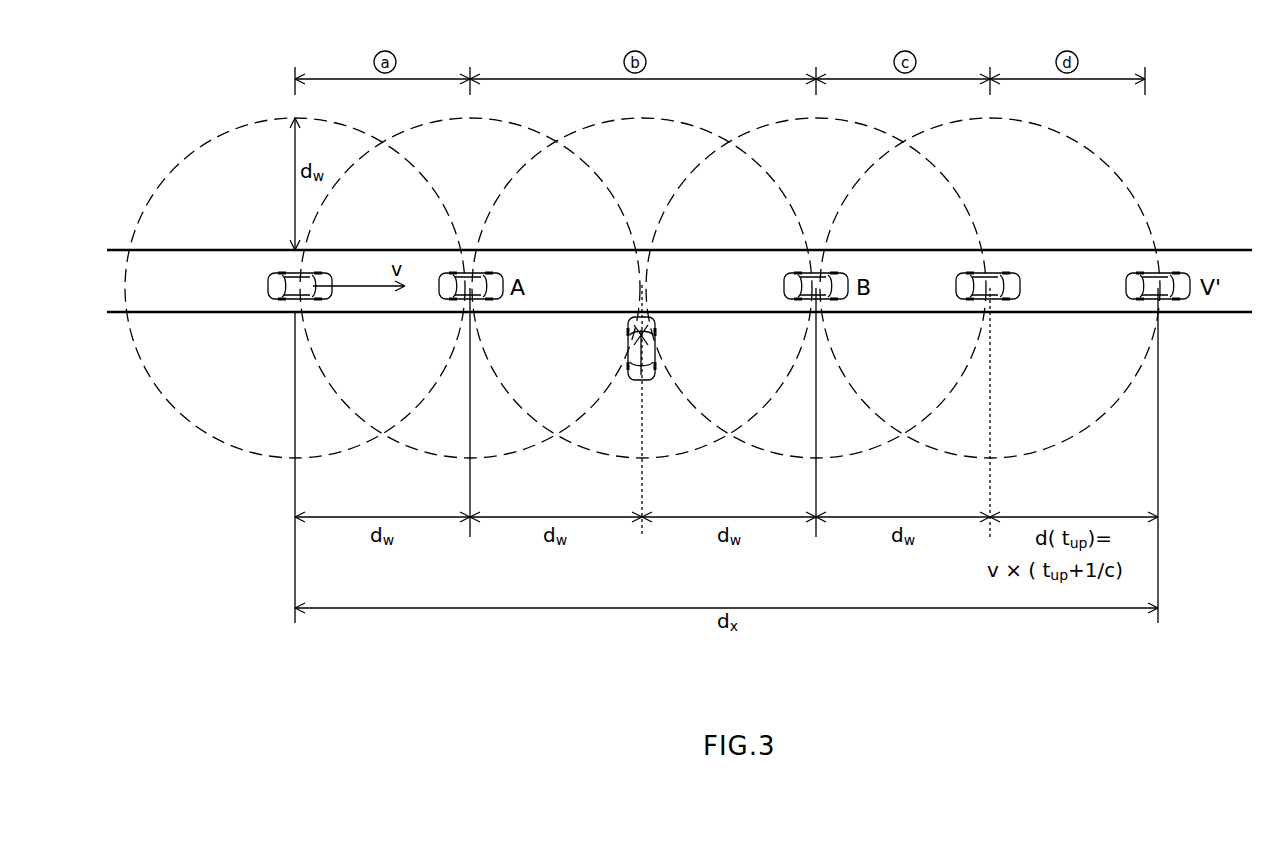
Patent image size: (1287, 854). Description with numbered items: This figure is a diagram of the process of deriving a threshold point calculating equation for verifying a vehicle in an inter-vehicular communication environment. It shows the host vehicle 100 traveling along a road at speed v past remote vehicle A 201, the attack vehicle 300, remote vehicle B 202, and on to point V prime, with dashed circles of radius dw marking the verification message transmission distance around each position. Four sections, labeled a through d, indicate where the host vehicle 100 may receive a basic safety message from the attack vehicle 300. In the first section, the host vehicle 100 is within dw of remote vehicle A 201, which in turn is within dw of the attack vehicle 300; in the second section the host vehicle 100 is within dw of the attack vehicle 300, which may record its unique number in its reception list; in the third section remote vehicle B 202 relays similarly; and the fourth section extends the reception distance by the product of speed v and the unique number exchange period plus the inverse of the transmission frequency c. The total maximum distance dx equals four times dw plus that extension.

The host vehicle 100 is at (283, 272).
The remote vehicle A 201 is at (487, 272).
The remote vehicle B 202 is at (797, 272).
The attack vehicle 300 is at (656, 347).